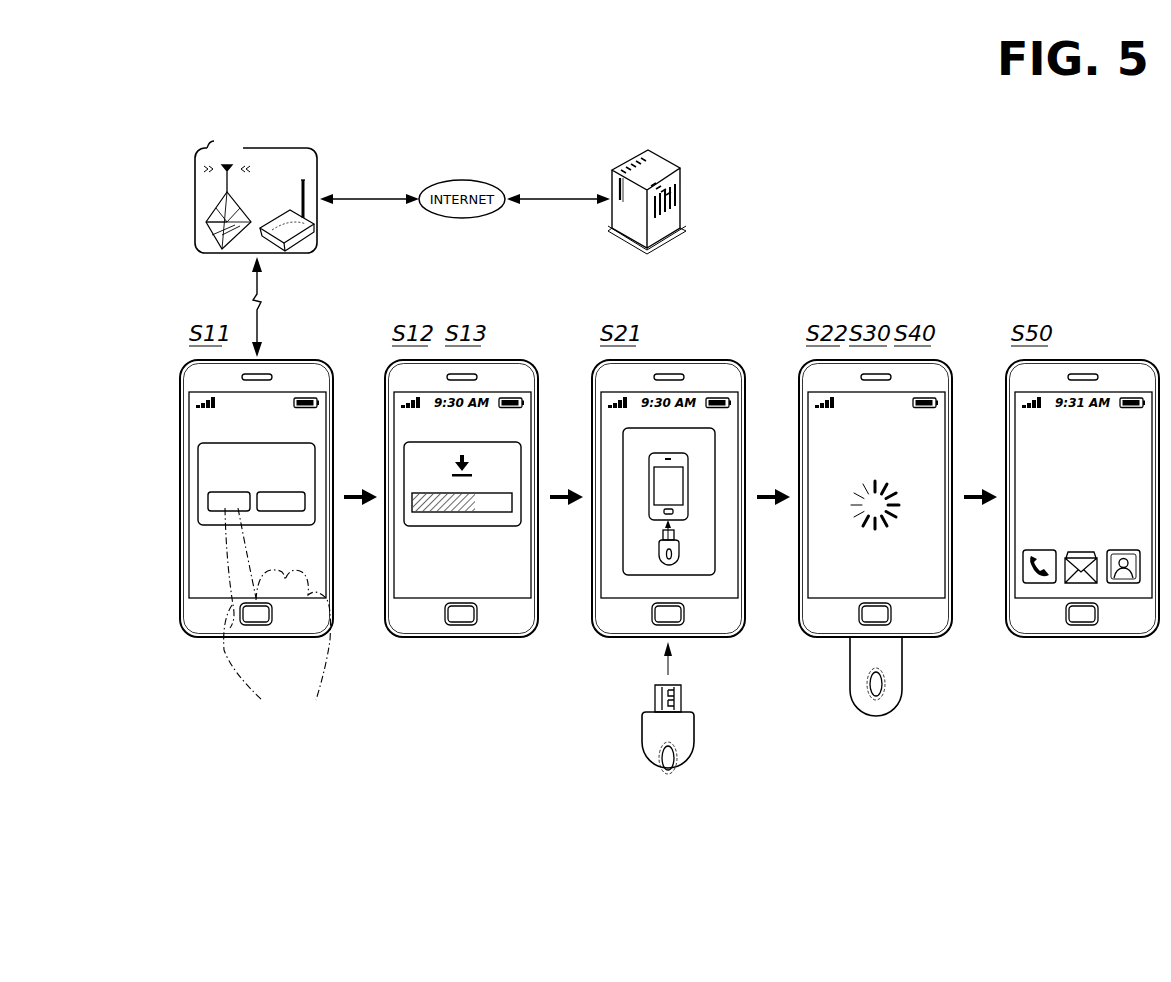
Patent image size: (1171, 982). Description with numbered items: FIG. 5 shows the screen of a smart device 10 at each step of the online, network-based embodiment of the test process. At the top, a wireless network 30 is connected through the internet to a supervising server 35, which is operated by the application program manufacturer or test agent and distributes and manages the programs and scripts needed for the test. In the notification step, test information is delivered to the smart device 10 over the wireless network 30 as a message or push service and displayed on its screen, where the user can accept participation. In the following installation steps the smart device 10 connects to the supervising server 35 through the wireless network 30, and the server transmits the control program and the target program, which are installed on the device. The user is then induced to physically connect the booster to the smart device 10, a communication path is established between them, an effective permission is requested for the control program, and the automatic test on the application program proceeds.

The smart device 10 is at (312, 360).
The wireless network 30 is at (256, 194).
The supervising server 35 is at (628, 160).